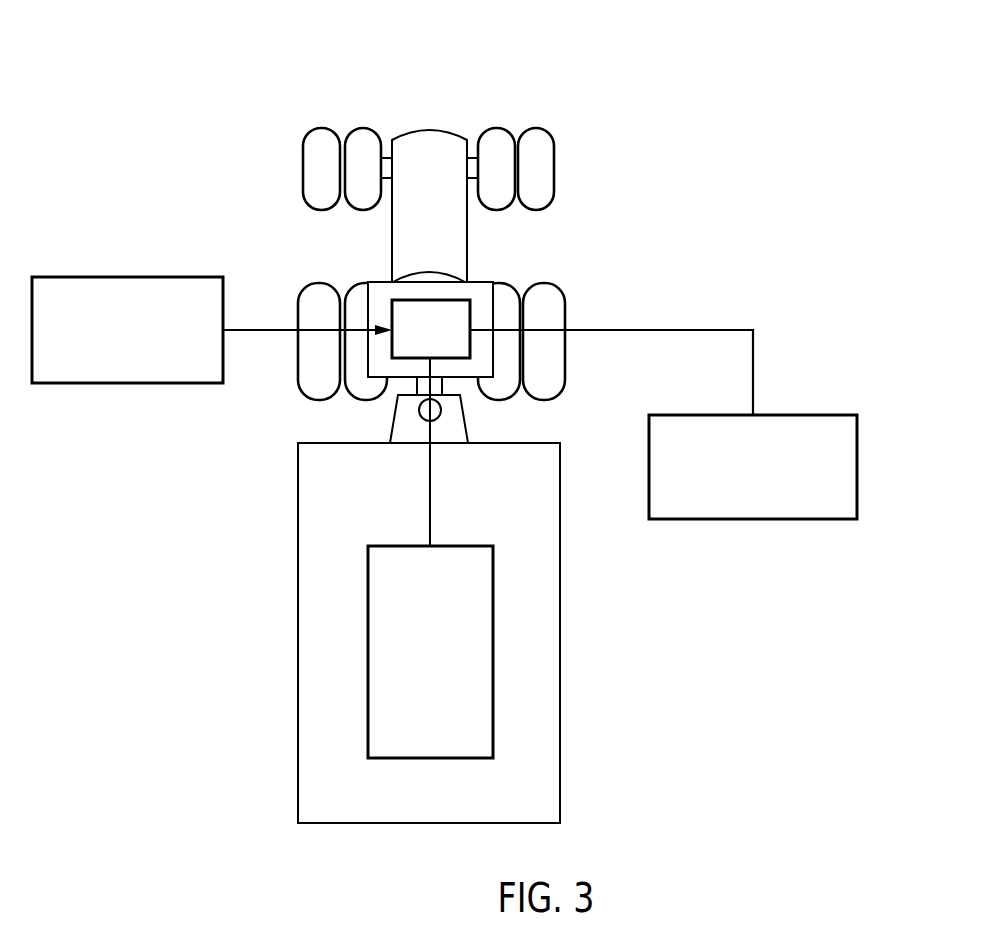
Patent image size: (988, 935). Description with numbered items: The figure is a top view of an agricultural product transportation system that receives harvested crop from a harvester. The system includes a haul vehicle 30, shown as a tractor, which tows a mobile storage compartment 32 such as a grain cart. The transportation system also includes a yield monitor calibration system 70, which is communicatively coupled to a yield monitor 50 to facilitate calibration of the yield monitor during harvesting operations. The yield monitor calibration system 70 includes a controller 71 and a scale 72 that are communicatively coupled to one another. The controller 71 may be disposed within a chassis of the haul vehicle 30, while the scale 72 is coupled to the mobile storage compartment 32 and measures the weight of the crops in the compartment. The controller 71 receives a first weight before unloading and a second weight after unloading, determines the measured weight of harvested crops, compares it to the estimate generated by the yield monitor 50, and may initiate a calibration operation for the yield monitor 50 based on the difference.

The haul vehicle 30 is at (352, 56).
The mobile storage compartment 32 is at (297, 471).
The yield monitor 50 is at (858, 467).
The yield monitor calibration system 70 is at (128, 277).
The controller 71 is at (431, 310).
The scale 72 is at (368, 650).